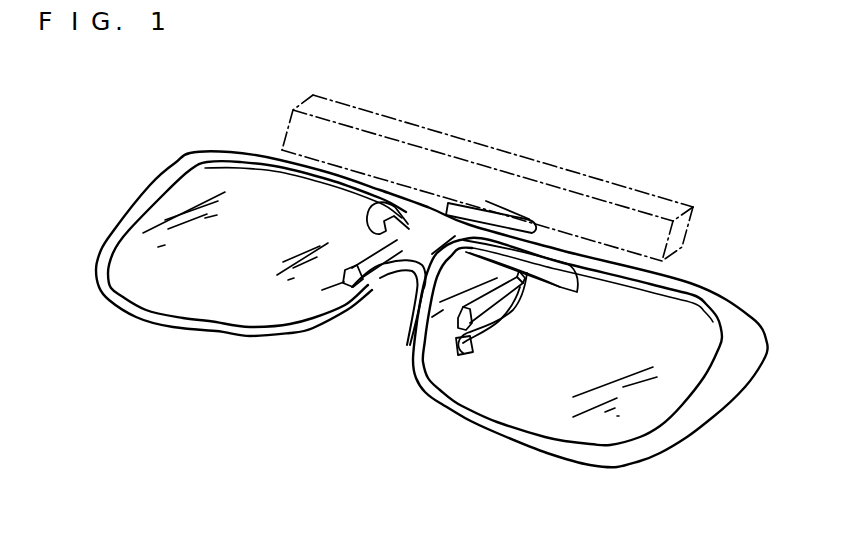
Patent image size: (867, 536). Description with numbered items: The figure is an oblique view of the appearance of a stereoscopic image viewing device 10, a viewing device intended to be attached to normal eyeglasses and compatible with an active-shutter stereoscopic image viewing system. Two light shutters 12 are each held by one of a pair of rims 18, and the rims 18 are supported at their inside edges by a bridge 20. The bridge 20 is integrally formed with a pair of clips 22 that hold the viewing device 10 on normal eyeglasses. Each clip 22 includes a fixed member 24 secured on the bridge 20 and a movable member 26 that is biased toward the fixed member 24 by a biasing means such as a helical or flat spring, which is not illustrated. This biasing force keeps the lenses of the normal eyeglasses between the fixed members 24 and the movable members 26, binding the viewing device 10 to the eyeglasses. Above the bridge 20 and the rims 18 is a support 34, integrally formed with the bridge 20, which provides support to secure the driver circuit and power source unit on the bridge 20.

The stereoscopic image viewing device 10 is at (641, 153).
The light shutter 12 is at (207, 303).
The rim 18 is at (238, 158).
The bridge 20 is at (395, 285).
The clip 22 is at (348, 315).
The fixed member 24 is at (473, 340).
The movable member 26 is at (462, 378).
The support 34 is at (425, 127).